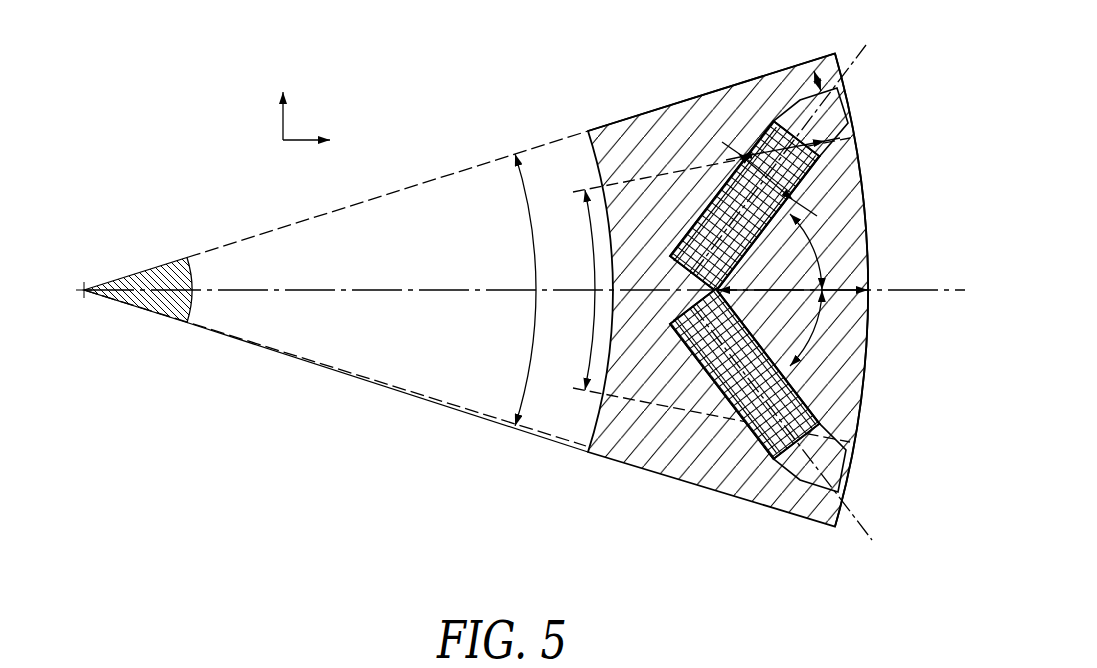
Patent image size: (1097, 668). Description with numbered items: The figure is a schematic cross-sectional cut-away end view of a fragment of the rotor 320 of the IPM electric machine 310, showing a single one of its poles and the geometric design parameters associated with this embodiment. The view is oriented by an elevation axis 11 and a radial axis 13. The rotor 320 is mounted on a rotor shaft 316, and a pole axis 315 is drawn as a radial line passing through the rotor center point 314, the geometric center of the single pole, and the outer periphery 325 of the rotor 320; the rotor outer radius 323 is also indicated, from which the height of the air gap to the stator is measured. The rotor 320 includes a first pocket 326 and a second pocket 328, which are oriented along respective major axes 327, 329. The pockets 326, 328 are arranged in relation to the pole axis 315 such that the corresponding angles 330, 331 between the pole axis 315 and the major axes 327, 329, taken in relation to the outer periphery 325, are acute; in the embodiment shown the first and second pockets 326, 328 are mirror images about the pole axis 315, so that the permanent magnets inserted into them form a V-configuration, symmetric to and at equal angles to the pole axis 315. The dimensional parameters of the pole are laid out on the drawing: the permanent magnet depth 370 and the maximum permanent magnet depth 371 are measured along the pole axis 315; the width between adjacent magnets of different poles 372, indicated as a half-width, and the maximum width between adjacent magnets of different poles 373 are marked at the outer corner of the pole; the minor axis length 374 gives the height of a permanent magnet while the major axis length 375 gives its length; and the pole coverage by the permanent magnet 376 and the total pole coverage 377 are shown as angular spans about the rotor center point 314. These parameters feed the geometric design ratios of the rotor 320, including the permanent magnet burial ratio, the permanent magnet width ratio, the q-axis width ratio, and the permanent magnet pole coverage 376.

The elevation axis 11 is at (299, 82).
The radial axis 13 is at (366, 151).
The IPM electric machine 310 is at (652, 98).
The rotor center point 314 is at (80, 296).
The pole axis 315 is at (487, 288).
The rotor shaft 316 is at (158, 270).
The rotor 320 is at (246, 210).
The rotor outer radius 323 is at (542, 443).
The outer periphery 325 is at (870, 272).
The first pocket 326 is at (808, 438).
The major axis of the first pocket 327 is at (853, 518).
The second pocket 328 is at (805, 156).
The major axis of the second pocket 329 is at (860, 72).
The angle between the pole axis and the first major axis 330 is at (806, 378).
The angle between the pole axis and the second major axis 331 is at (818, 250).
The permanent magnet depth 370 is at (843, 342).
The maximum permanent magnet depth 371 is at (868, 297).
The width between adjacent magnets of different poles 372 is at (771, 68).
The maximum width between adjacent magnets of different poles 373 is at (839, 52).
The minor axis length 374 is at (816, 214).
The major axis length 375 is at (836, 146).
The pole coverage by the permanent magnet 376 is at (583, 234).
The total pole coverage 377 is at (512, 352).